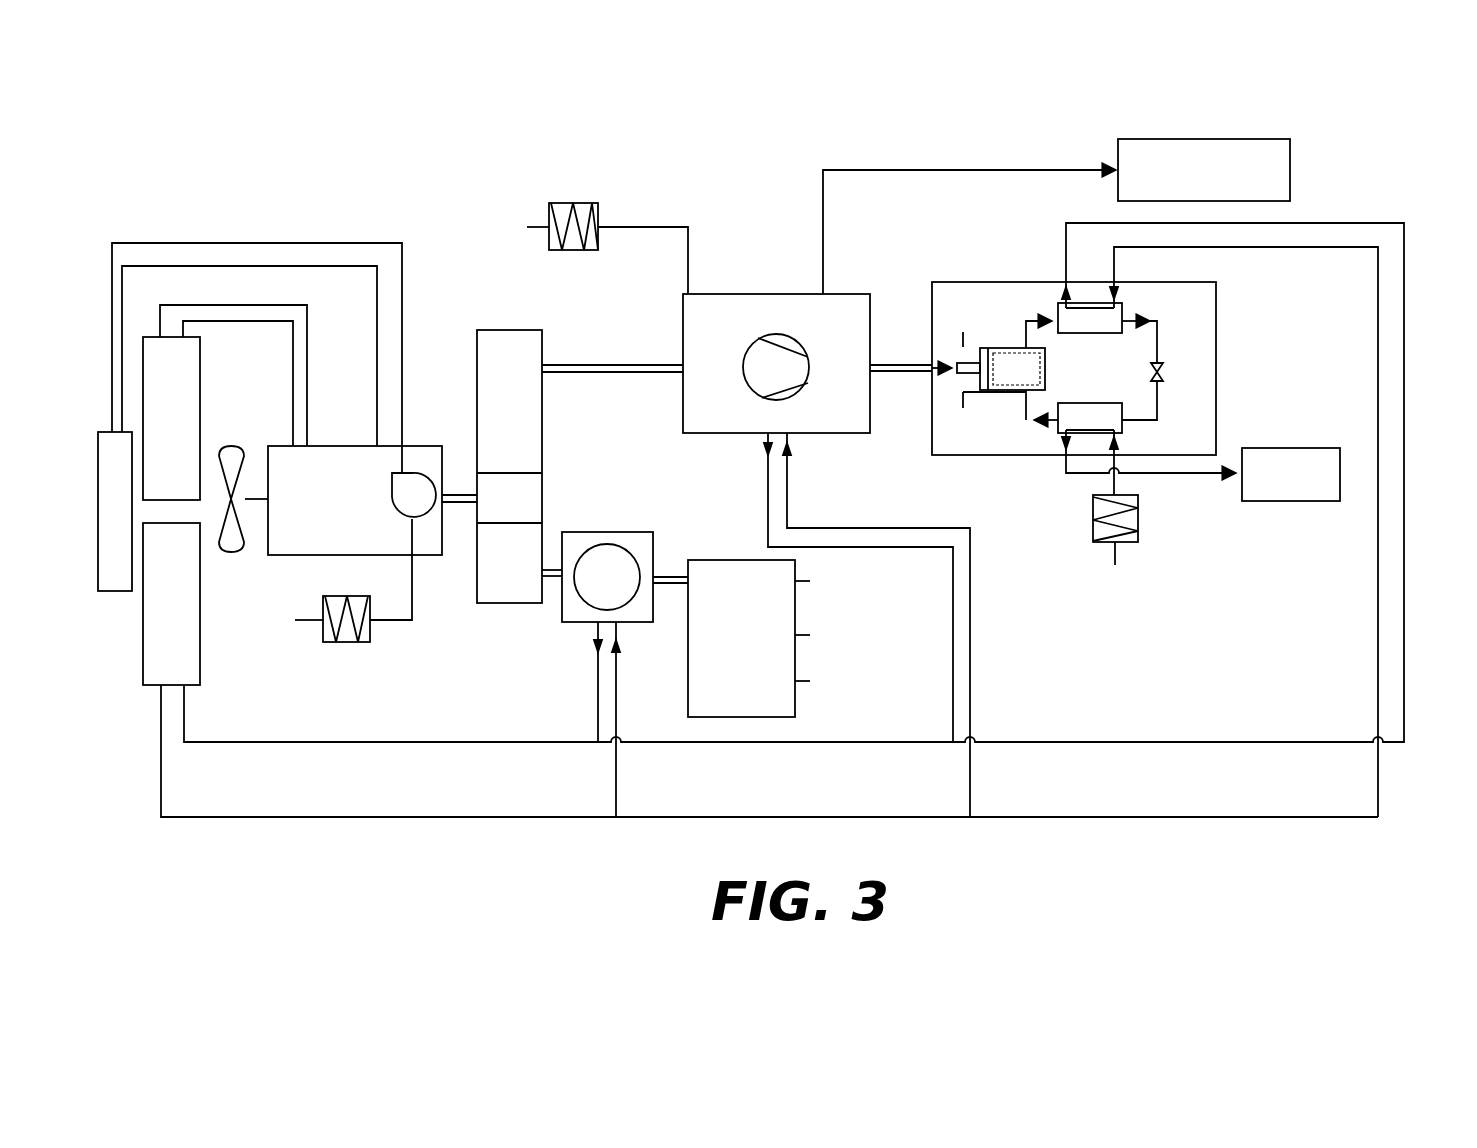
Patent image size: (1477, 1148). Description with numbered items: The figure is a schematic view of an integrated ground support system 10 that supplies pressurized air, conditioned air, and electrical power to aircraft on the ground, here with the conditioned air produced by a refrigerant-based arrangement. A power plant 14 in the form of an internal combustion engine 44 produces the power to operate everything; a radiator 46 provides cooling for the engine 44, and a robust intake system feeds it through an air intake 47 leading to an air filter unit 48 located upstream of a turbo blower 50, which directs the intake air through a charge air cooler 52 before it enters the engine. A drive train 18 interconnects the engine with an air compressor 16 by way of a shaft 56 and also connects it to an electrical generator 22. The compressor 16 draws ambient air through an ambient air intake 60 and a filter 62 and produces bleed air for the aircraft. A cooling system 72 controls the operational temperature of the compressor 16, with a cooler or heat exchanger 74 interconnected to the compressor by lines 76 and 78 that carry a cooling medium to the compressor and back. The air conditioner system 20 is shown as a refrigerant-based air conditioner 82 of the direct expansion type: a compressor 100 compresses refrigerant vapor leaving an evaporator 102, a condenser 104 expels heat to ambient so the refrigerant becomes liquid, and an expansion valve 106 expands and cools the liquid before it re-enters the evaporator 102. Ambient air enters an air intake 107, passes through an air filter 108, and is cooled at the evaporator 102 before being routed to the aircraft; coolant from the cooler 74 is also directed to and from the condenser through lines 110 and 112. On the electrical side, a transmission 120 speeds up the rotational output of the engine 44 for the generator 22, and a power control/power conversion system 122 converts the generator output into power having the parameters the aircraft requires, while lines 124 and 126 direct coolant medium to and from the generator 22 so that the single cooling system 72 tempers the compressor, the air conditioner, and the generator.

The integrated ground support system 10 is at (1227, 108).
The power plant 14 is at (279, 570).
The air compressor 16 is at (674, 327).
The drive train 18 is at (461, 346).
The air conditioner system 20 is at (1233, 285).
The electrical generator 22 is at (551, 628).
The internal combustion engine 44 is at (328, 446).
The radiator 46 is at (200, 358).
The air intake 47 is at (310, 620).
The air filter unit 48 is at (370, 636).
The turbo blower 50 is at (415, 475).
The charge air cooler 52 is at (115, 591).
The drive shaft 56 is at (477, 385).
The ambient air intake 60 is at (530, 226).
The filter 62 is at (561, 203).
The cooling system 72 is at (158, 826).
The cooler 74 is at (200, 613).
The line 76 is at (787, 473).
The line 78 is at (768, 470).
The refrigerant-based air conditioner 82 is at (1216, 326).
The compressor 100 is at (1002, 392).
The evaporator 102 is at (1060, 433).
The condenser 104 is at (1058, 306).
The expansion valve 106 is at (1165, 374).
The air intake 107 is at (1120, 548).
The air filter 108 is at (1138, 503).
The coolant return line 110 is at (1378, 343).
The coolant supply line 112 is at (1404, 318).
The transmission 120 is at (477, 568).
The power control/power conversion system 122 is at (688, 686).
The line 124 is at (616, 775).
The line 126 is at (598, 705).